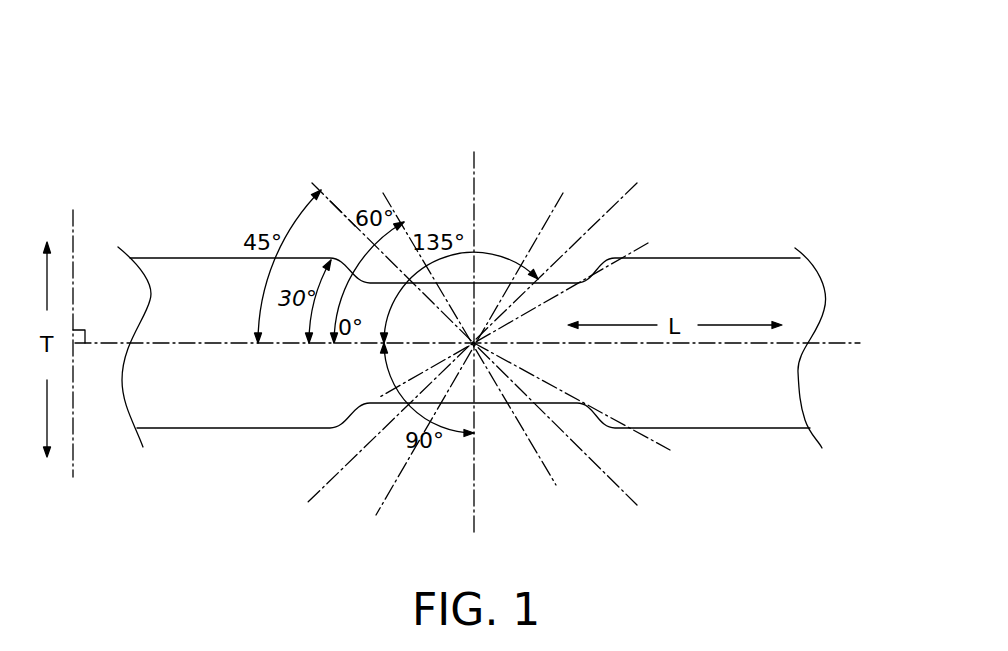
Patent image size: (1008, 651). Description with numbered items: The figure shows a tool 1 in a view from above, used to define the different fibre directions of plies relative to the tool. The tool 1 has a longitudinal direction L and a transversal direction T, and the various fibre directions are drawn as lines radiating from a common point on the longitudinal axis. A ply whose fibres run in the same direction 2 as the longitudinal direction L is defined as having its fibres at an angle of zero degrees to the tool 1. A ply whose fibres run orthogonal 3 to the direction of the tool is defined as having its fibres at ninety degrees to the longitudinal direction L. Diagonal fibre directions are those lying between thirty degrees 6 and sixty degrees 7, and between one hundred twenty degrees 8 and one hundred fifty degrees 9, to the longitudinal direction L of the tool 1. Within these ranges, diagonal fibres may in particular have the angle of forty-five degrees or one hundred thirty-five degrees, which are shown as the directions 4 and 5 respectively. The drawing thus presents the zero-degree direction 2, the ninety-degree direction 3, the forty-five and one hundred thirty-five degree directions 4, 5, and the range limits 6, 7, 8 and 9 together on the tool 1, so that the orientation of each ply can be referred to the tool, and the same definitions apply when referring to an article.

The tool 1 is at (748, 187).
The fibre direction same as longitudinal direction 2 is at (735, 344).
The fibre direction orthogonal to the tool 3 is at (477, 162).
The 45° fibre direction 4 is at (347, 217).
The 135° fibre direction 5 is at (607, 210).
The 30° fibre direction 6 is at (312, 255).
The 60° fibre direction 7 is at (315, 187).
The 120° fibre direction 8 is at (582, 163).
The 150° fibre direction 9 is at (648, 243).